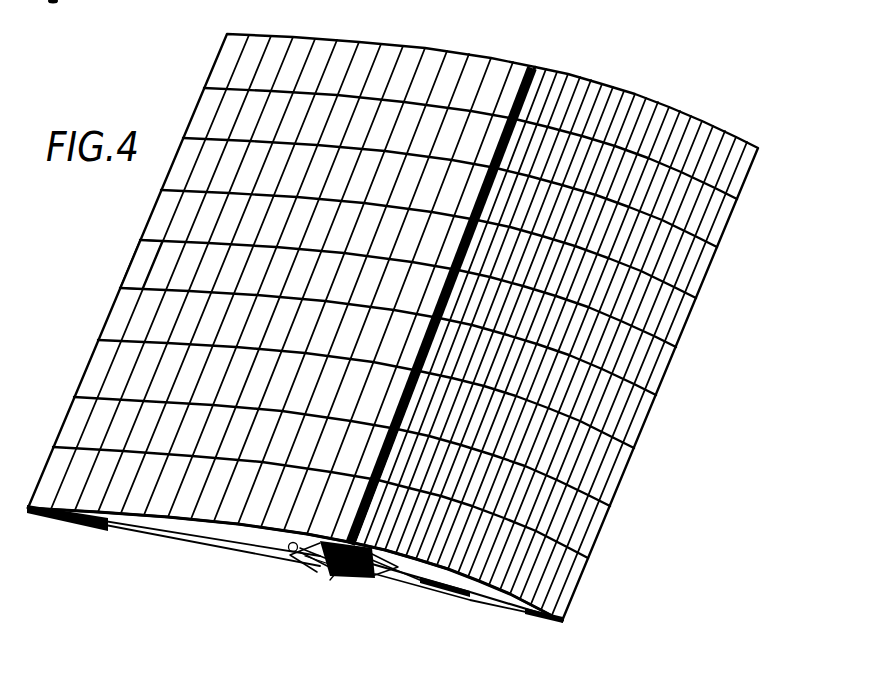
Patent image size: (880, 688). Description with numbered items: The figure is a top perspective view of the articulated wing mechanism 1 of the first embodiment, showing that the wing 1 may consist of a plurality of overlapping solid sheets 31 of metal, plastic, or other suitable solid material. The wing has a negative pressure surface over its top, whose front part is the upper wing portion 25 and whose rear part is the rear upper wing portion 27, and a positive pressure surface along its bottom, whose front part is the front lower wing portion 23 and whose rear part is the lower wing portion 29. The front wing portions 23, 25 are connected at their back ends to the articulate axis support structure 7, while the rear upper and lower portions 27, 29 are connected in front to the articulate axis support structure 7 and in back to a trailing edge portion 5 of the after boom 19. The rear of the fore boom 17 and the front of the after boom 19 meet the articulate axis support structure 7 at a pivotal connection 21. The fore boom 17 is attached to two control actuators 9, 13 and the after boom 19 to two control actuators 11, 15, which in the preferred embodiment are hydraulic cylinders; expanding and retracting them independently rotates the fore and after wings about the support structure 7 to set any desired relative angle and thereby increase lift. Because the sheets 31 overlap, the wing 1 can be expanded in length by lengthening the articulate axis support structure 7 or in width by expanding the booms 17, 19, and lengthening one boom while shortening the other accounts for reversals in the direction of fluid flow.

The articulated wing mechanism 1 is at (607, 59).
The trailing edge portion 5 is at (30, 508).
The articulate axis support structure 7 is at (352, 583).
The control actuator 9 is at (395, 590).
The control actuator 11 is at (313, 574).
The control actuator 13 is at (395, 592).
The control actuator 15 is at (290, 553).
The fore boom 17 is at (470, 598).
The after boom 19 is at (195, 540).
The pivotal connection 21 is at (337, 581).
The front lower wing portion 23 is at (493, 613).
The upper wing portion 25 is at (645, 95).
The rear upper wing portion 27 is at (391, 47).
The lower wing portion 29 is at (130, 533).
The solid sheets 31 is at (143, 268).